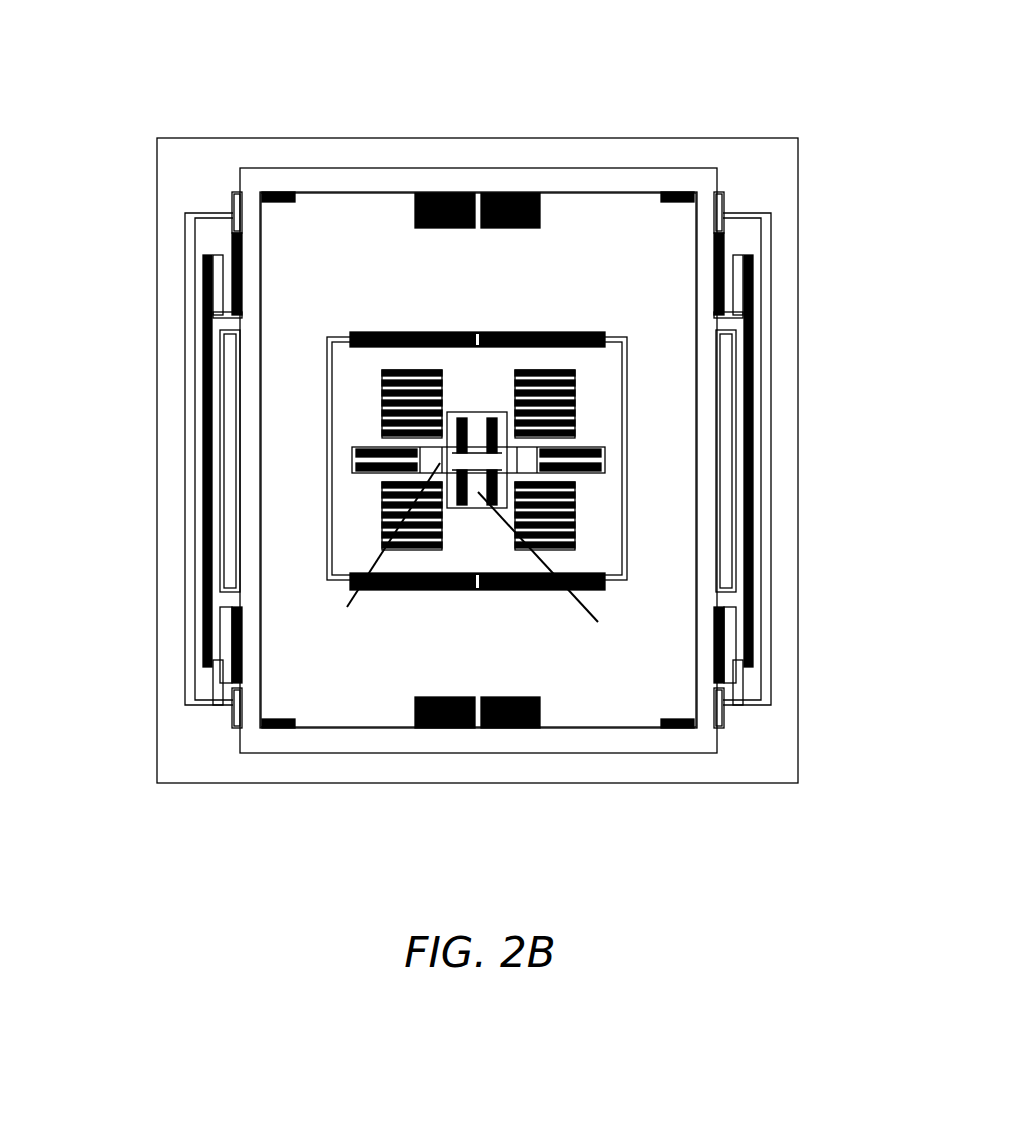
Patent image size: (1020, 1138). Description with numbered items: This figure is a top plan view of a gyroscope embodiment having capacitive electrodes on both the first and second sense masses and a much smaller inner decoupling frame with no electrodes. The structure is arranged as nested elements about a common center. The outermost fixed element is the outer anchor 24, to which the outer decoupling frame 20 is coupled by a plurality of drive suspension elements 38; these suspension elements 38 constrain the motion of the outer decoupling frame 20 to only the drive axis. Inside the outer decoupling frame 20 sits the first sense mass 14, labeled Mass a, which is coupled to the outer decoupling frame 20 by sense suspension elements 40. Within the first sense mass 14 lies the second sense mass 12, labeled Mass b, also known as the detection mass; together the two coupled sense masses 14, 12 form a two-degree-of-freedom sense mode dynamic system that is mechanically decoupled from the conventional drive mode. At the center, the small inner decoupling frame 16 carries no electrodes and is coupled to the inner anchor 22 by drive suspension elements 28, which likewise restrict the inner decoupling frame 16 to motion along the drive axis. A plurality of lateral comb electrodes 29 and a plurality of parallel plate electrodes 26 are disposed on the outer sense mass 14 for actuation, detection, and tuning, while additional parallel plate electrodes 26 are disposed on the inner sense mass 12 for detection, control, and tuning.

The second sense mass 12 is at (610, 390).
The first sense mass 14 is at (677, 252).
The inner decoupling frame 16 is at (438, 462).
The outer decoupling frame 20 is at (567, 195).
The inner anchor 22 is at (479, 485).
The outer anchor 24 is at (204, 198).
The parallel plate electrodes 26 is at (520, 193).
The drive suspension elements 28 is at (395, 592).
The lateral comb electrodes 29 is at (382, 333).
The drive suspension elements 38 is at (233, 219).
The sense suspension elements 40 is at (275, 192).